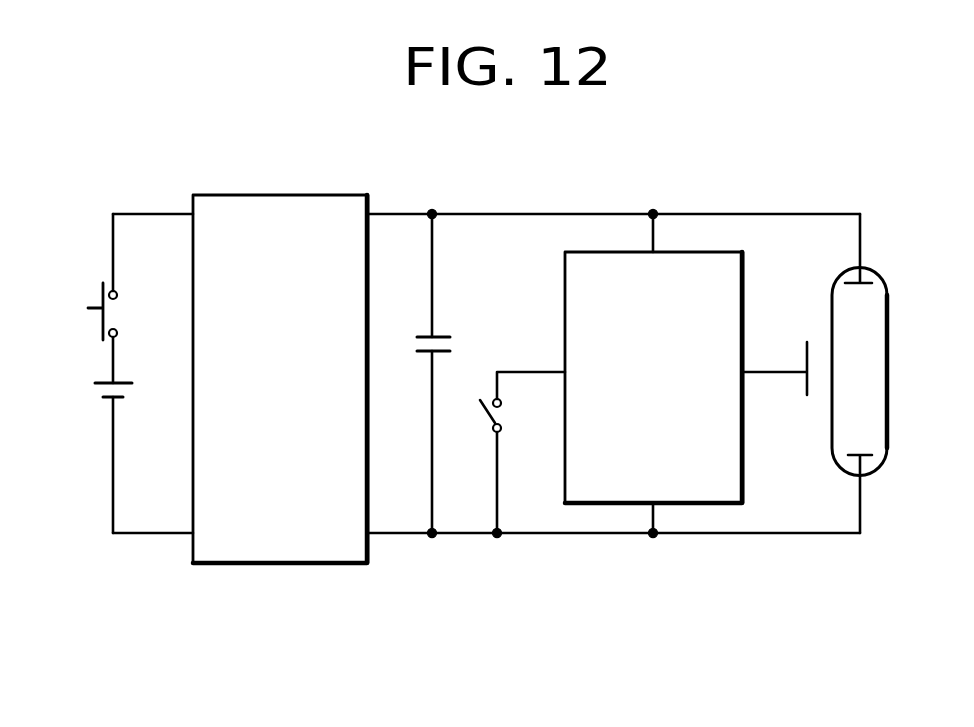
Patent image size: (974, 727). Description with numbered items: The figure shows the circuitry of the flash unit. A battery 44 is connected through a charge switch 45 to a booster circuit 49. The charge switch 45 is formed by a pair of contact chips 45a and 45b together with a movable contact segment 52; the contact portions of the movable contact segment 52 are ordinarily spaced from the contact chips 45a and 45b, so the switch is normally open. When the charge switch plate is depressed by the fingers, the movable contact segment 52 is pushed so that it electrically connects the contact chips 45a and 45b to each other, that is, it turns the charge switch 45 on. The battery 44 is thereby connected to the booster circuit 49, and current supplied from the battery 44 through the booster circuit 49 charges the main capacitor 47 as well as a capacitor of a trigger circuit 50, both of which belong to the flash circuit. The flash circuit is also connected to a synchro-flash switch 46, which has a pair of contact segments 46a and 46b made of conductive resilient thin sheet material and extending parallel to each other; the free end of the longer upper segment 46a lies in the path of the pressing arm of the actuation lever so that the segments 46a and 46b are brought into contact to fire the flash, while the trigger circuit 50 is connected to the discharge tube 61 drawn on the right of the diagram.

The battery 44 is at (103, 398).
The charge switch 45 is at (106, 304).
The contact chip 45a is at (120, 338).
The contact chip 45b is at (118, 292).
The movable contact segment 52 is at (101, 327).
The booster circuit 49 is at (288, 566).
The main capacitor 47 is at (451, 330).
The synchro-flash switch 46 is at (502, 451).
The upper contact segment 46a is at (492, 430).
The lower contact segment 46b is at (501, 405).
The trigger circuit 50 is at (745, 422).
The flash discharge tube 61 is at (889, 406).